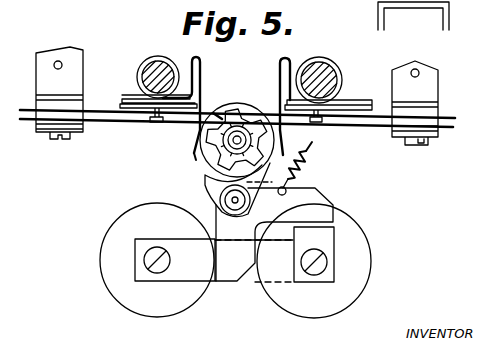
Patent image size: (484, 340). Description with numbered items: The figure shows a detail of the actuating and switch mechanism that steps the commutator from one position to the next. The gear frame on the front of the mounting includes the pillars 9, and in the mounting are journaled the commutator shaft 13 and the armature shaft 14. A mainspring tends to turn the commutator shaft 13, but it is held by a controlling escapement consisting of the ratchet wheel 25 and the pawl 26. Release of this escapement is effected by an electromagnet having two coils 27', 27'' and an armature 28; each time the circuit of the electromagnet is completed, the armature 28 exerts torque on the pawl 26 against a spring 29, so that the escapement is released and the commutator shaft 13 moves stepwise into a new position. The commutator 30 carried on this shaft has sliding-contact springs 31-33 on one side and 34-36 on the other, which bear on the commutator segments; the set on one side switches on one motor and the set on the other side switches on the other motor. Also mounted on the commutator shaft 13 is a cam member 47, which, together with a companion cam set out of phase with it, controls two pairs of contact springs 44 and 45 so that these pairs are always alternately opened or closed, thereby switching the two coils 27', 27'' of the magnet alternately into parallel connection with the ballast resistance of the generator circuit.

The pillars 9 is at (156, 74).
The commutator shaft 13 is at (238, 134).
The armature shaft 14 is at (219, 200).
The ratchet wheel 25 is at (275, 138).
The pawl 26 is at (271, 180).
The electromagnet coil 27' is at (157, 268).
The electromagnet coil 27'' is at (314, 270).
The armature 28 is at (315, 195).
The spring 29 is at (312, 163).
The commutator 30 is at (202, 155).
The sliding-contact springs 31-33 is at (200, 82).
The sliding-contact springs 34-36 is at (287, 63).
The pair of contact springs 44 is at (94, 115).
The pair of contact springs 45 is at (355, 125).
The cam member 47 is at (235, 133).